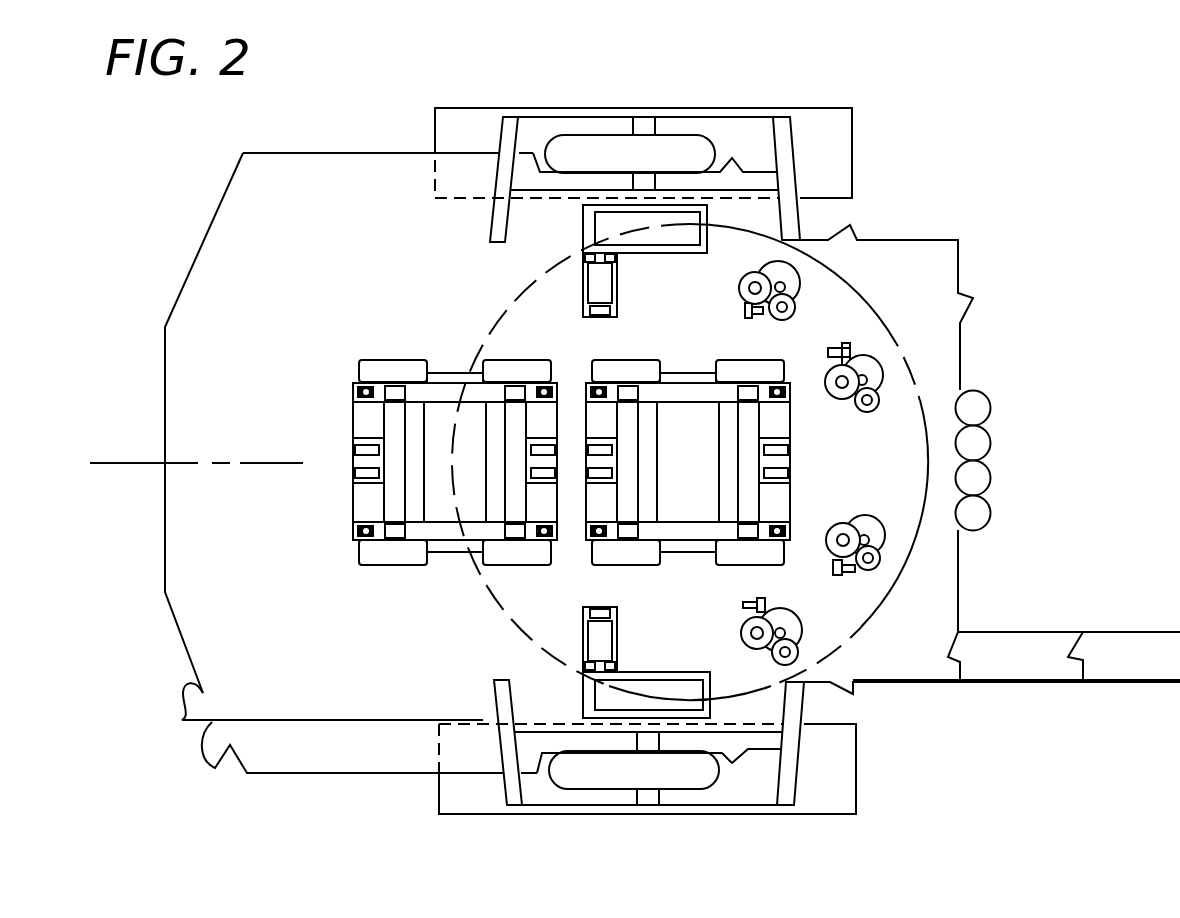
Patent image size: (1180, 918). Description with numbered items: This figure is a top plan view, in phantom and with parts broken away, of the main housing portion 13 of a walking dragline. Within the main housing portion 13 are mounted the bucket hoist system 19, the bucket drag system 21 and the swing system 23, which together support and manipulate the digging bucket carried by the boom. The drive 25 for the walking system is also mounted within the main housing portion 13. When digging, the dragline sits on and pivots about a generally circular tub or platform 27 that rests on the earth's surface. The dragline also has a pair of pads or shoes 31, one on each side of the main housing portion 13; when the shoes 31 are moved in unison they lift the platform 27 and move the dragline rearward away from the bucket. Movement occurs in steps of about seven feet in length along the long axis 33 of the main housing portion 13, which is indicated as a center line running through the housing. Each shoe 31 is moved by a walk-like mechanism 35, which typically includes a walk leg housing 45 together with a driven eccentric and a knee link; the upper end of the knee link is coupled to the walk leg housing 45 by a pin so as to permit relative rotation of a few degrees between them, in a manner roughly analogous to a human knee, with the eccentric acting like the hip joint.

The main housing portion 13 is at (298, 163).
The bucket hoist system 19 is at (758, 357).
The bucket drag system 21 is at (402, 358).
The swing system 23 is at (800, 281).
The drive for the walking system 25 is at (618, 298).
The platform 27 is at (883, 317).
The pad or shoe 31 is at (852, 133).
The long axis 33 is at (180, 463).
The walk-like mechanism 35 is at (697, 795).
The walk leg housing 45 is at (583, 773).